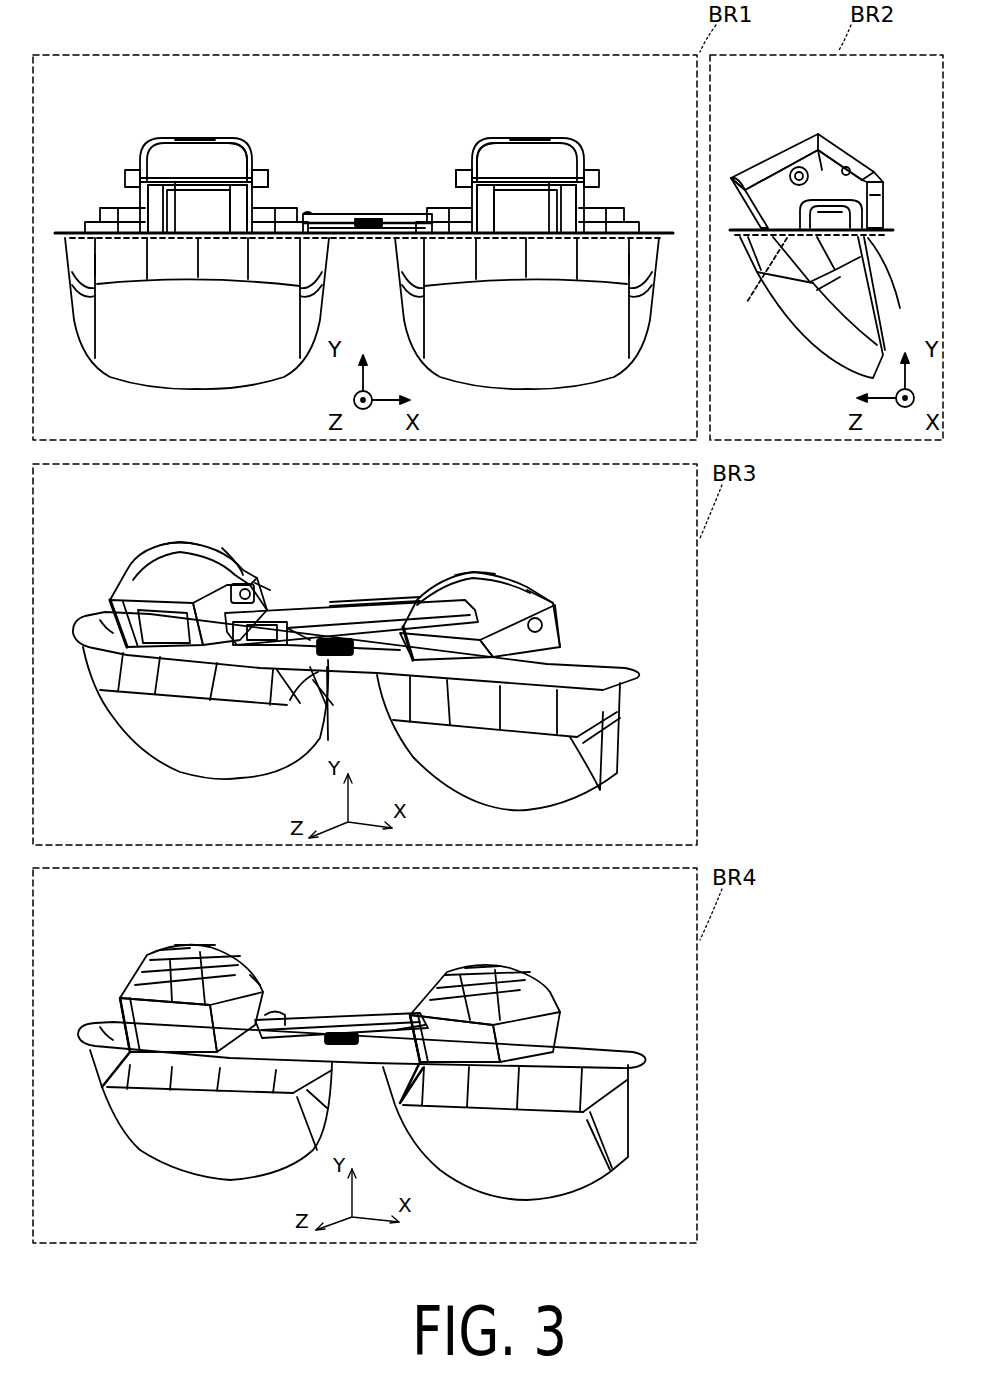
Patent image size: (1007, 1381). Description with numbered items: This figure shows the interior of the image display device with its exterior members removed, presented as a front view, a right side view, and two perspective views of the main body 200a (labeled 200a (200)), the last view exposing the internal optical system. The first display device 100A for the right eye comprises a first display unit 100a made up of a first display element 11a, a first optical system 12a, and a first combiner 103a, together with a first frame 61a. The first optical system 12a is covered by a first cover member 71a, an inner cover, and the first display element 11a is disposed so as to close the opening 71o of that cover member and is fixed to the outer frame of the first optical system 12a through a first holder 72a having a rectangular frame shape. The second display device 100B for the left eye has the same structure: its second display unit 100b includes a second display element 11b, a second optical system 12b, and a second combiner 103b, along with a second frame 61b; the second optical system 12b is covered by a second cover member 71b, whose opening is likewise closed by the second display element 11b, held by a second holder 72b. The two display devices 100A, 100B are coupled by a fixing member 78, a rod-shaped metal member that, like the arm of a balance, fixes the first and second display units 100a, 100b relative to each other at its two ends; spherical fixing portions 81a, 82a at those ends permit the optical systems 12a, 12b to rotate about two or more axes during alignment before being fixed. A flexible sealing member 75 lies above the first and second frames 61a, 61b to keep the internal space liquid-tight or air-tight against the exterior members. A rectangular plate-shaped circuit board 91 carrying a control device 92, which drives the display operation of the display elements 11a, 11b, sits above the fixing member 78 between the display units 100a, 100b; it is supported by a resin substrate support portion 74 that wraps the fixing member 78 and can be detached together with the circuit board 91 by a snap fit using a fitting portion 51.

The first display device 100A is at (144, 134).
The second display device 100B is at (582, 136).
The first display unit 100a is at (267, 161).
The second display unit 100b is at (457, 161).
The main body 200a is at (363, 143).
The support unit 200 is at (367, 146).
The first display element 11a is at (180, 210).
The second display element 11b is at (544, 210).
The first optical system 12a is at (208, 157).
The second optical system 12b is at (518, 157).
The first cover member 71a is at (248, 143).
The second cover member 71b is at (478, 143).
The opening 71o is at (193, 197).
The first holder 72a is at (157, 187).
The second holder 72b is at (567, 187).
The substrate support portion 74 is at (308, 635).
The sealing member 75 is at (82, 233).
The fixing member 78 is at (365, 212).
The fixing portion 81a is at (283, 1026).
The fixing portion 82a is at (408, 1033).
The circuit board 91 is at (350, 600).
The control device 92 is at (375, 583).
The fitting portion 51 is at (320, 700).
The first frame 61a is at (102, 238).
The second frame 61b is at (622, 238).
The first combiner 103a is at (127, 360).
The second combiner 103b is at (597, 360).